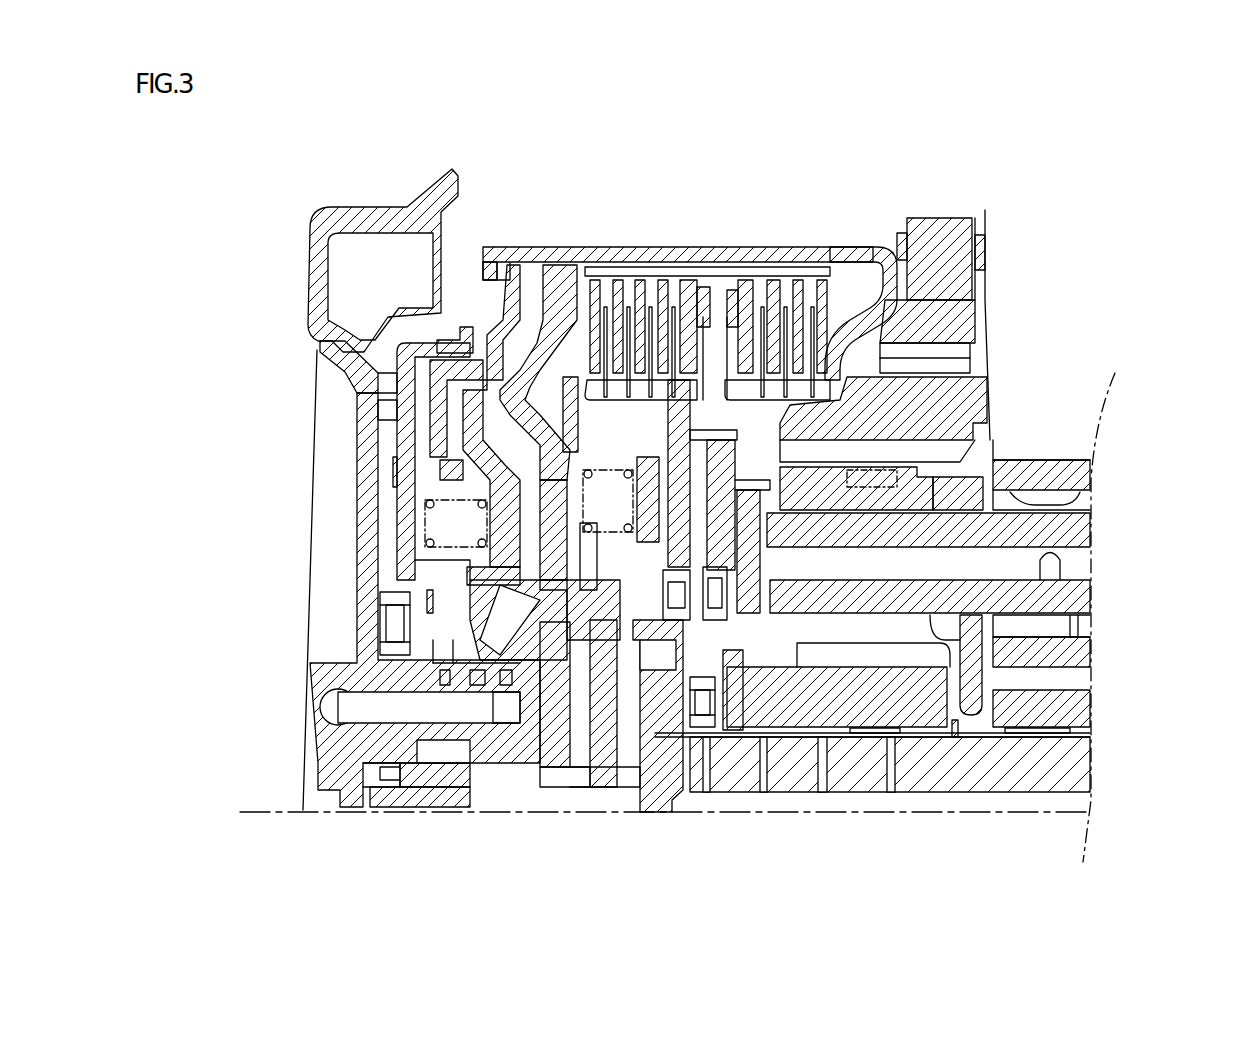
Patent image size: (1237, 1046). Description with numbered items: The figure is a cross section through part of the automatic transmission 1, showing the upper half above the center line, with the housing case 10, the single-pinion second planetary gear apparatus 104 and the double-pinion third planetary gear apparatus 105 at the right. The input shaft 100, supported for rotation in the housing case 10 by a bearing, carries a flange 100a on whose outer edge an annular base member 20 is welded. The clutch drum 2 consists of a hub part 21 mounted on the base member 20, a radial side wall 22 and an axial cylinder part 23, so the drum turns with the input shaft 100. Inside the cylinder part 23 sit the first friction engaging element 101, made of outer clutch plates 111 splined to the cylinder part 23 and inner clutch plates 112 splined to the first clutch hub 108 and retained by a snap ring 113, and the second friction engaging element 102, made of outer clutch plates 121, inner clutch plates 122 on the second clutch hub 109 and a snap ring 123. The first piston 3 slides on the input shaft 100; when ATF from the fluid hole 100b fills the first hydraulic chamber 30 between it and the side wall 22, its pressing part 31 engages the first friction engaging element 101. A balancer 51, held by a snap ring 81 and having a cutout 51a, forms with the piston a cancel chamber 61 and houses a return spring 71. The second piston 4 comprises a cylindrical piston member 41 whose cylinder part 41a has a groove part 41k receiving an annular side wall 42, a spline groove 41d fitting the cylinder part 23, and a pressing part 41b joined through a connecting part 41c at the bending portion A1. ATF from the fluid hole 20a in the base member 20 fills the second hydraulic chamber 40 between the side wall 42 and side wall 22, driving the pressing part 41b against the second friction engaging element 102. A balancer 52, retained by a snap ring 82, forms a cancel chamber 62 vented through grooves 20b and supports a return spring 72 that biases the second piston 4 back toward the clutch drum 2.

The automatic transmission 1 is at (290, 190).
The clutch drum 2 is at (460, 438).
The first piston 3 is at (367, 347).
The second piston 4 is at (485, 235).
The housing case 10 is at (318, 745).
The base member 20 is at (420, 655).
The fluid hole 20a is at (493, 690).
The grooves 20b is at (380, 657).
The hub part 21 is at (607, 690).
The side wall 22 is at (520, 550).
The cylinder part 23 is at (705, 290).
The first hydraulic chamber 30 is at (463, 640).
The pressing part 31 is at (573, 293).
The second hydraulic chamber 40 is at (517, 520).
The piston member 41 is at (778, 245).
The cylinder part 41a is at (522, 247).
The pressing part 41b is at (900, 365).
The connecting part 41c is at (910, 302).
The spline groove 41d is at (920, 270).
The groove part 41k is at (503, 293).
The side wall 42 is at (365, 327).
The balancer 51 is at (683, 493).
The cutout 51a is at (650, 690).
The balancer 52 is at (420, 412).
The cancel chamber 61 is at (467, 470).
The cancel chamber 62 is at (385, 415).
The return spring 71 is at (647, 503).
The return spring 72 is at (427, 543).
The snap ring 81 is at (700, 730).
The snap ring 82 is at (423, 630).
The input shaft 100 is at (740, 775).
The flange 100a is at (545, 767).
The fluid hole 100b is at (577, 780).
The first friction engaging element 101 is at (637, 261).
The second friction engaging element 102 is at (815, 261).
The second planetary gear apparatus 104 is at (878, 632).
The third planetary gear apparatus 105 is at (1088, 678).
The first clutch hub 108 is at (713, 397).
The second clutch hub 109 is at (880, 413).
The outer clutch plates 111 is at (608, 285).
The inner clutch plates 112 is at (605, 290).
The snap ring 113 is at (690, 290).
The outer clutch plates 121 is at (810, 290).
The inner clutch plates 122 is at (815, 300).
The snap ring 123 is at (735, 295).
The bending portion A1 is at (890, 250).